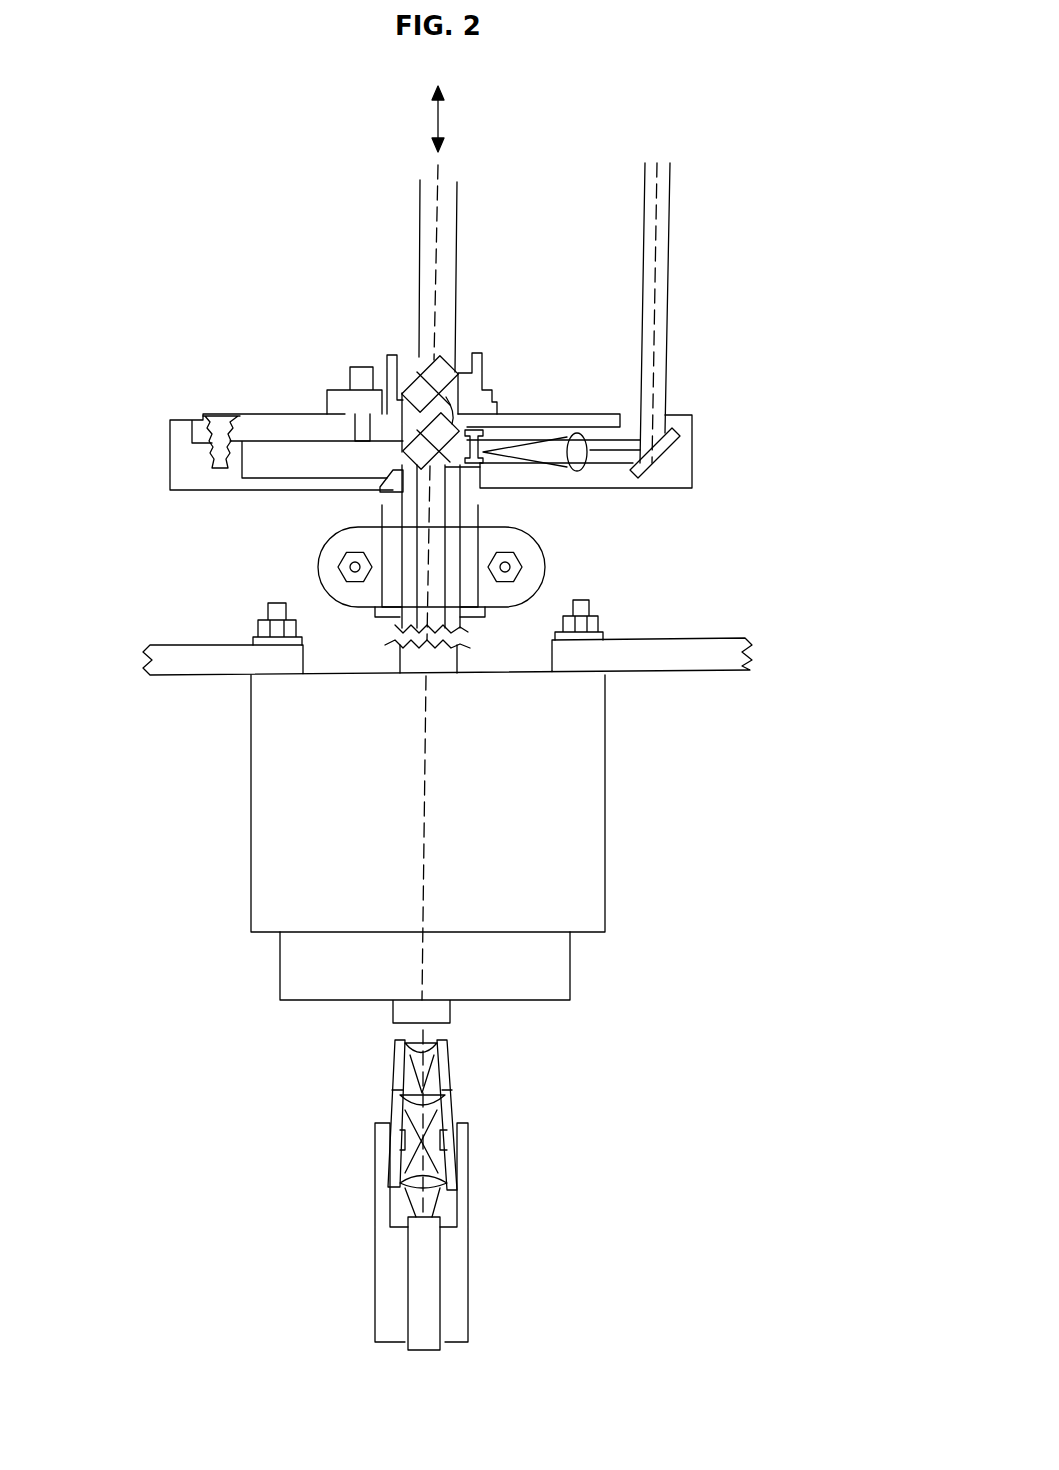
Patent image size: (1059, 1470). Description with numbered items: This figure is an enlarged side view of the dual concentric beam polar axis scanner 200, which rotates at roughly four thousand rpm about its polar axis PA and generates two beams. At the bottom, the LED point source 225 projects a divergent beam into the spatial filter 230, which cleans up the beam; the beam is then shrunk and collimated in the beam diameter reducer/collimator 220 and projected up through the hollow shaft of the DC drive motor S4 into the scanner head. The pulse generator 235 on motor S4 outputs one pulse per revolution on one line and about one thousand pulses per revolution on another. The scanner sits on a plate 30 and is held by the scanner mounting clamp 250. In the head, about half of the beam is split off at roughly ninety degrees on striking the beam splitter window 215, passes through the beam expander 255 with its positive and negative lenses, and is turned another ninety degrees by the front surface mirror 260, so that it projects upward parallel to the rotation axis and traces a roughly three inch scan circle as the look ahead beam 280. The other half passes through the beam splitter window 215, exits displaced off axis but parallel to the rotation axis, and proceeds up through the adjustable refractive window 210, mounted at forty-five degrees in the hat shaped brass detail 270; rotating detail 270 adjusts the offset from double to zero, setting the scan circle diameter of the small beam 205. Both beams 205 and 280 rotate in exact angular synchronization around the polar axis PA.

The dual concentric beam polar axis scanner 200 is at (370, 140).
The polar axis PA is at (458, 119).
The small beam 205 is at (457, 213).
The look ahead beam 280 is at (672, 180).
The adjustable refractive window 210 is at (428, 362).
The hat shaped brass detail 270 is at (483, 375).
The beam splitter window 215 is at (393, 477).
The beam expander 255 is at (480, 490).
The front surface mirror 260 is at (663, 462).
The scanner mounting clamp 250 is at (545, 565).
The mounting plate 30 is at (655, 640).
The DC drive motor with hollow shaft and integral pulse generator S4 is at (605, 770).
The pulse generator 235 is at (570, 957).
The beam diameter reducer/collimator 220 is at (390, 1098).
The spatial filter 230 is at (450, 1097).
The LED point source 225 is at (442, 1268).